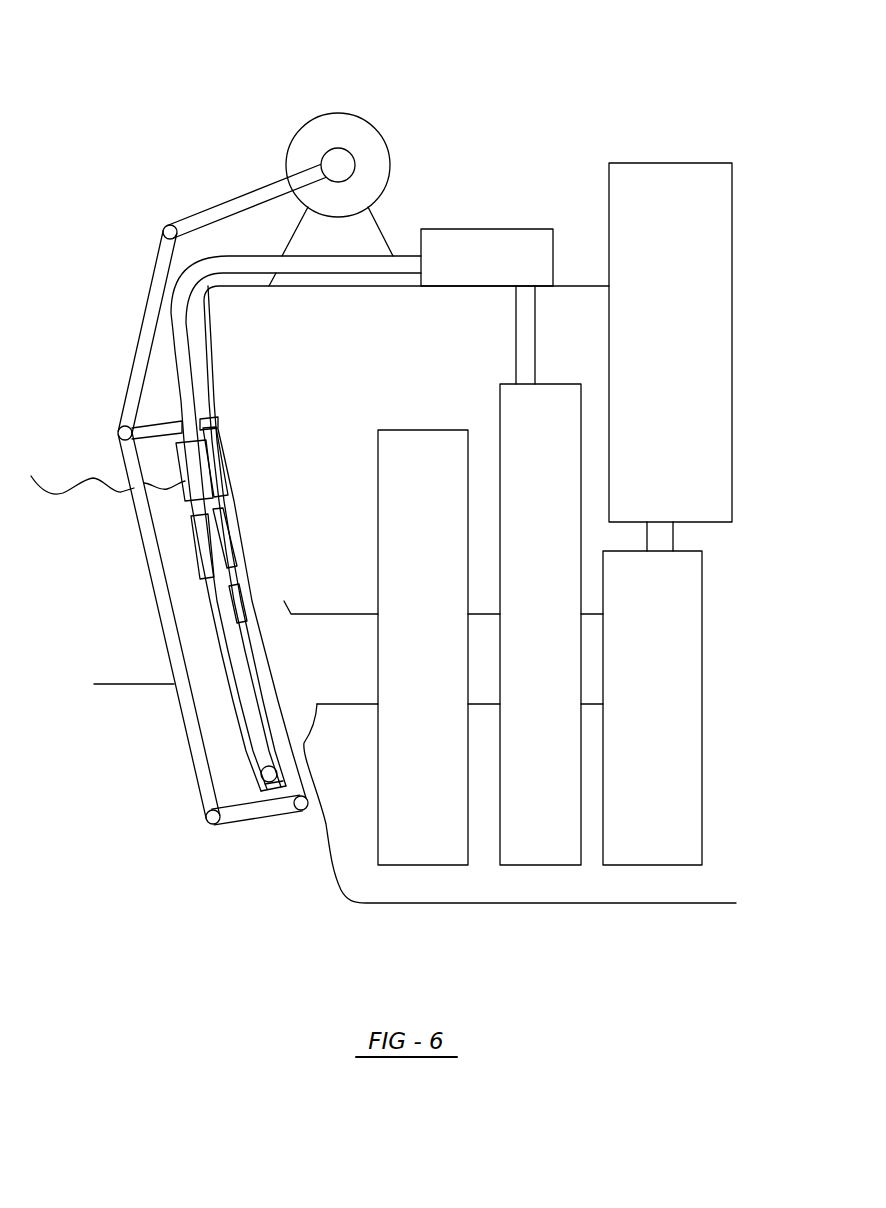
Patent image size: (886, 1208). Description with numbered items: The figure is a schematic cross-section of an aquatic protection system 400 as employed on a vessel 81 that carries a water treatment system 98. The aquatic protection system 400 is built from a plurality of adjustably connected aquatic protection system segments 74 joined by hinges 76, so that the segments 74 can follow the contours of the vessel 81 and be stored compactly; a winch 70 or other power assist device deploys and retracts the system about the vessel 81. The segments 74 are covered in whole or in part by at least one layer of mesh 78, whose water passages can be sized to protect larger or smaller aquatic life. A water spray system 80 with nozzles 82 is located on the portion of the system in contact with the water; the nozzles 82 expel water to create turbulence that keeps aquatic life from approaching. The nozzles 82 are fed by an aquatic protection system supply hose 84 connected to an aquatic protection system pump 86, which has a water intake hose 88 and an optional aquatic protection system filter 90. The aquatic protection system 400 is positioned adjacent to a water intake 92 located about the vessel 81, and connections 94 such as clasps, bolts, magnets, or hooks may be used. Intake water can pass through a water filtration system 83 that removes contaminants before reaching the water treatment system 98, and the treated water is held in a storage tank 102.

The winch 70 is at (323, 112).
The aquatic protection system segments 74 is at (250, 188).
The hinges 76 is at (162, 231).
The mesh 78 is at (172, 668).
The water spray system 80 is at (237, 720).
The vessel 81 is at (581, 285).
The nozzles 82 is at (257, 747).
The water filtration system 83 is at (110, 687).
The aquatic protection system supply hose 84 is at (357, 255).
The aquatic protection system pump 86 is at (483, 228).
The water intake hose 88 is at (534, 333).
The aquatic protection system filter 90 is at (545, 864).
The water intake 92 is at (302, 742).
The connections 94 is at (233, 613).
The water treatment system 98 is at (703, 735).
The storage tank 102 is at (731, 385).
The aquatic protection system 400 is at (116, 735).